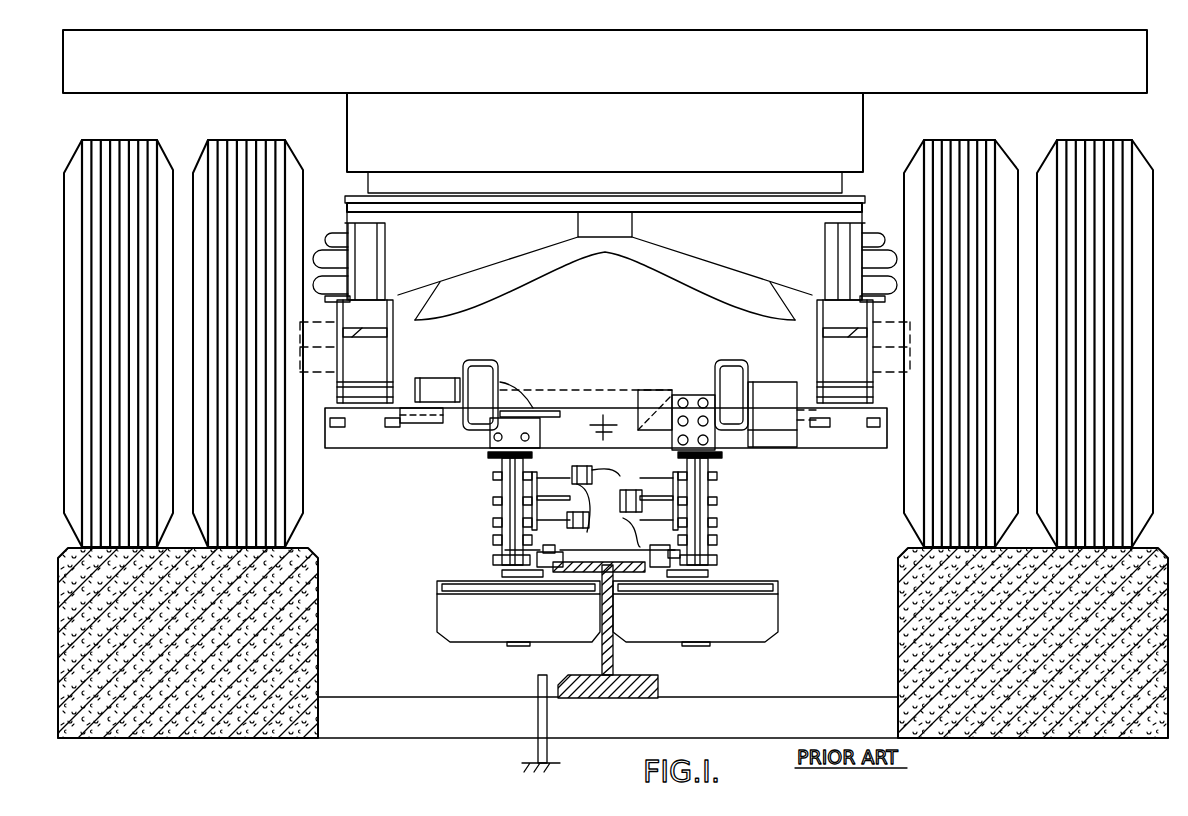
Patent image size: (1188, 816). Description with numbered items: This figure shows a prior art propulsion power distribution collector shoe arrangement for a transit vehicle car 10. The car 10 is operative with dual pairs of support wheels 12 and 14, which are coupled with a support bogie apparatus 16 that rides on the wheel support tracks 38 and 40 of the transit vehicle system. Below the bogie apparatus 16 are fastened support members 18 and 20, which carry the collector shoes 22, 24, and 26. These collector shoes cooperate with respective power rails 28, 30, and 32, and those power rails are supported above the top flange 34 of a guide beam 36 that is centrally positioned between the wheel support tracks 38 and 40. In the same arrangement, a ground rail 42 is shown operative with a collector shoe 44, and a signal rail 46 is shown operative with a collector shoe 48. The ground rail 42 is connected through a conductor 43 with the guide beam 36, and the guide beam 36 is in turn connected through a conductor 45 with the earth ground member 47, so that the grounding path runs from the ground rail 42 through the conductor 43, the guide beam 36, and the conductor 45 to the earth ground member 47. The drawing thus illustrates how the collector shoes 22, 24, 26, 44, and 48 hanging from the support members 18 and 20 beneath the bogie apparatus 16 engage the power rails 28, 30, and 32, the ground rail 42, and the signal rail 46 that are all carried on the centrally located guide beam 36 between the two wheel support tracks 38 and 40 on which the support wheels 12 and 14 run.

The transit vehicle car 10 is at (607, 73).
The support wheels 12 is at (165, 167).
The support wheels 14 is at (1048, 157).
The support bogie apparatus 16 is at (742, 249).
The support member 18 is at (504, 482).
The support member 20 is at (722, 485).
The collector shoe 22 is at (572, 478).
The collector shoe 24 is at (553, 543).
The collector shoe 26 is at (655, 494).
The power rail 28 is at (583, 468).
The power rail 30 is at (634, 504).
The power rail 32 is at (640, 515).
The top flange 34 is at (634, 575).
The guide beam 36 is at (602, 655).
The wheel support track 38 is at (284, 602).
The wheel support track 40 is at (925, 600).
The ground rail 42 is at (556, 568).
The conductor 43 is at (505, 555).
The collector shoe 44 is at (545, 568).
The conductor 45 is at (568, 675).
The signal rail 46 is at (672, 572).
The earth ground member 47 is at (538, 710).
The collector shoe 48 is at (698, 575).